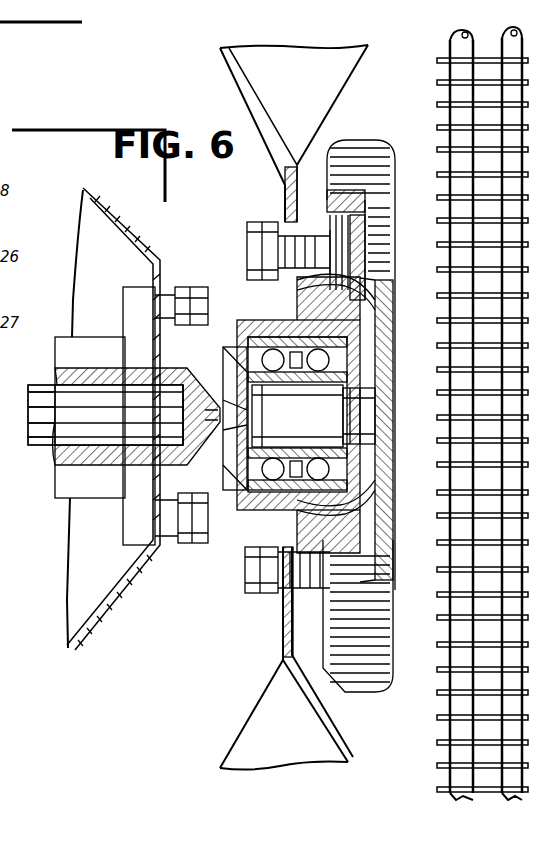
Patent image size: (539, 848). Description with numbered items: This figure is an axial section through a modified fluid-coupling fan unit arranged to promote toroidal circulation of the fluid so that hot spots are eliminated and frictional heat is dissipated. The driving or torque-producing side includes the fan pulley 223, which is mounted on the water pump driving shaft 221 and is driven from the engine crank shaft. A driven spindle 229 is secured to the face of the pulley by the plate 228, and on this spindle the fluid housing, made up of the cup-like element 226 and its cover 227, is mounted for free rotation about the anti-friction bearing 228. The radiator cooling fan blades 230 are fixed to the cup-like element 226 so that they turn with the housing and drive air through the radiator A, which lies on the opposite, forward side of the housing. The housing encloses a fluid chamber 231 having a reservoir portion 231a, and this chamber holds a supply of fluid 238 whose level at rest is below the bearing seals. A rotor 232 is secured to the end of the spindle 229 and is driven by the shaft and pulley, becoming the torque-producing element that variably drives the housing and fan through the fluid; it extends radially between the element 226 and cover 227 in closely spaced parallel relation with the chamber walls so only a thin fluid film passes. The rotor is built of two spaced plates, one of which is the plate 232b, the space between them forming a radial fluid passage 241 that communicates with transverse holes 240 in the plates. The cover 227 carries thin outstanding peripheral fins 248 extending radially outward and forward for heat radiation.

The radiator A is at (452, 94).
The shaft 221 is at (50, 430).
The fan pulley 223 is at (142, 242).
The cup-like element 226 is at (238, 285).
The cover 227 is at (383, 372).
The plate; anti-friction bearing 228 is at (250, 522).
The driven spindle 229 is at (360, 412).
The radiator cooling fan blades 230 is at (345, 78).
The fluid chamber 231 is at (345, 272).
The reservoir portion 231a is at (350, 294).
The rotor 232 is at (330, 215).
The spaced plate 232b is at (340, 236).
The fluid 238 is at (365, 550).
The transverse holes 240 is at (332, 256).
The radial fluid passage 241 is at (350, 200).
The peripheral fins 248 is at (375, 150).